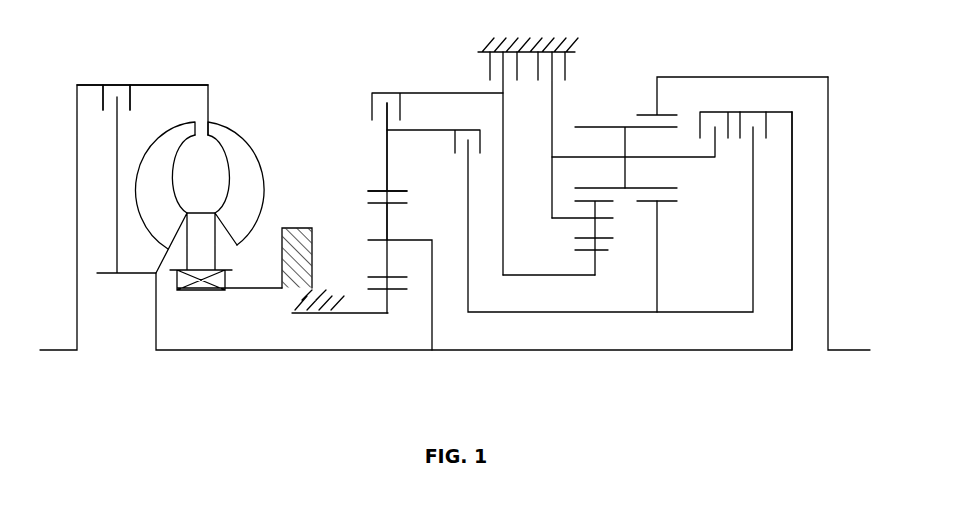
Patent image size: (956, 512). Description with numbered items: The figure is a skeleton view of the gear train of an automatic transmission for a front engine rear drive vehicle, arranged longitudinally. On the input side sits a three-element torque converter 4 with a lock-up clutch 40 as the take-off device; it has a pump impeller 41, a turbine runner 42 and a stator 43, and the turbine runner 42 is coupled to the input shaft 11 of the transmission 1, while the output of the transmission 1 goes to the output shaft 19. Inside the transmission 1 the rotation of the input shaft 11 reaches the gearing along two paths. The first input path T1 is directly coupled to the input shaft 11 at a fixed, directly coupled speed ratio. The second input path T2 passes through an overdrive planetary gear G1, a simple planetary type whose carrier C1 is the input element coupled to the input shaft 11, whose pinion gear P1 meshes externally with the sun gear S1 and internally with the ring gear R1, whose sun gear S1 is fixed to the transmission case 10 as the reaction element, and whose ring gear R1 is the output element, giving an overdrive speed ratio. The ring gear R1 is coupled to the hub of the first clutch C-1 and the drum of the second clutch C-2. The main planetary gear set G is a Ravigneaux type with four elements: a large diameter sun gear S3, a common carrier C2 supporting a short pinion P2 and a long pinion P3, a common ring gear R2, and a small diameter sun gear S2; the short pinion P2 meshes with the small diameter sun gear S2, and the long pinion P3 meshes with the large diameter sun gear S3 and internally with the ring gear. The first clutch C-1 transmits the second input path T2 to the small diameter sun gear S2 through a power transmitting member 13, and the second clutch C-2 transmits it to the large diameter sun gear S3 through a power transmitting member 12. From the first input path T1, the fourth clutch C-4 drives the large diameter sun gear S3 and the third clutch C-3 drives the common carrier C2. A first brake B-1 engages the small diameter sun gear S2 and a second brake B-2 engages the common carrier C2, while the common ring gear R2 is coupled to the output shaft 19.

The transmission 1 is at (585, 74).
The torque converter 4 is at (140, 76).
The transmission case 10 is at (303, 231).
The input shaft 11 is at (550, 351).
The power transmitting member 12 is at (566, 313).
The power transmitting member 13 is at (547, 277).
The output shaft 19 is at (853, 351).
The lock-up clutch 40 is at (131, 99).
The pump impeller 41 is at (242, 147).
The turbine runner 42 is at (165, 191).
The stator 43 is at (216, 251).
The first clutch C-1 is at (436, 190).
The second clutch C-2 is at (434, 128).
The third clutch C-3 is at (745, 113).
The fourth clutch C-4 is at (756, 113).
The first brake B-1 is at (500, 142).
The second brake B-2 is at (550, 113).
The first input path T1 is at (799, 153).
The second input path T2 is at (376, 155).
The planetary gear set G is at (600, 116).
The overdrive planetary gear G1 is at (360, 199).
The ring gear R1 is at (398, 188).
The pinion gear P1 is at (370, 208).
The sun gear S1 is at (392, 291).
The carrier C1 is at (412, 238).
The common carrier C2 is at (552, 207).
The short pinion P2 is at (582, 232).
The small diameter sun gear S2 is at (603, 251).
The long pinion P3 is at (660, 186).
The large diameter sun gear S3 is at (671, 202).
The common ring gear R2 is at (642, 113).